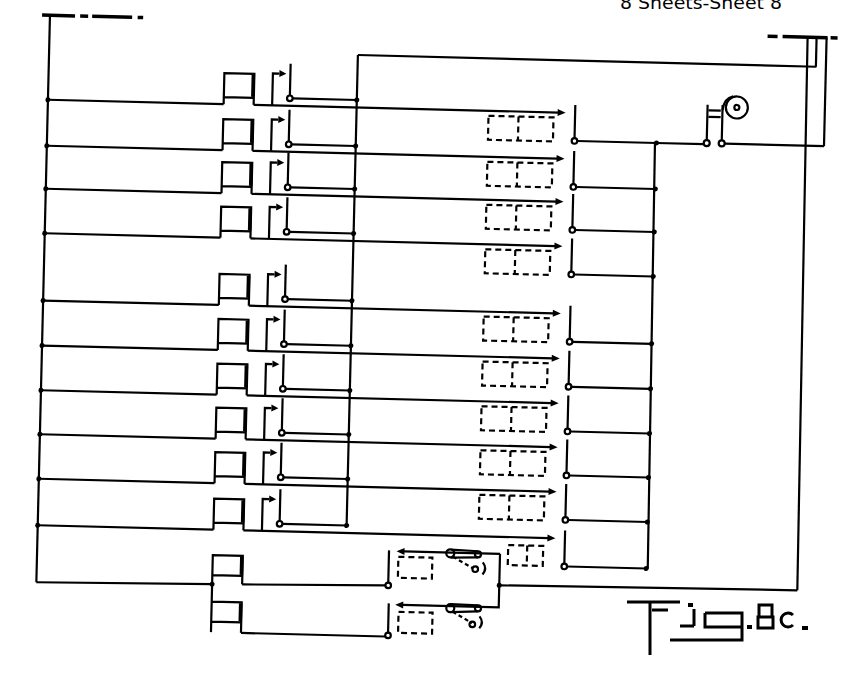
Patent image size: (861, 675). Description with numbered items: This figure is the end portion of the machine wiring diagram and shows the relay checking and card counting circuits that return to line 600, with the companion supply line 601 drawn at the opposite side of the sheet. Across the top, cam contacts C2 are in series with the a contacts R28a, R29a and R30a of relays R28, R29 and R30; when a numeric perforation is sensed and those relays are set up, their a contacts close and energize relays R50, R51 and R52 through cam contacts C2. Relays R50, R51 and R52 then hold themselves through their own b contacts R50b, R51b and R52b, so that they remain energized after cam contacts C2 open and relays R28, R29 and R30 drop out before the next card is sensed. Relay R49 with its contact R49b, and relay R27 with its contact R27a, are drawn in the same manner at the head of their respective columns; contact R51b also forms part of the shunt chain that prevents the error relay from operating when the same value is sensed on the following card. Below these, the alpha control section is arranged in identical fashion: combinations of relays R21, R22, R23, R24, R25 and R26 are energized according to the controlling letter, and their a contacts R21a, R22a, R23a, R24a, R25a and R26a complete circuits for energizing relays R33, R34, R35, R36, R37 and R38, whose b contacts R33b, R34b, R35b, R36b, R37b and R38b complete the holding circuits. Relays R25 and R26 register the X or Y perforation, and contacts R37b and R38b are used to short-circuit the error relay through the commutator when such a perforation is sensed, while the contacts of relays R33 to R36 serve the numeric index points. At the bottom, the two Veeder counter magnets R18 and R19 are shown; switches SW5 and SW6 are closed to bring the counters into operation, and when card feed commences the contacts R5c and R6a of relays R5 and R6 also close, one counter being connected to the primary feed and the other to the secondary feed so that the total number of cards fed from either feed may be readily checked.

The line 600 is at (51, 49).
The supply bus conductor 601 is at (826, 21).
The cam contacts C2 is at (726, 105).
The relay R49 is at (216, 88).
The relay contact R49b is at (316, 85).
The relay R50 is at (215, 134).
The b contact of relay R50 R50b is at (315, 131).
The relay R51 is at (214, 177).
The b contact of relay R51 R51b is at (314, 174).
The relay R52 is at (212, 221).
The b contact of relay R52 R52b is at (313, 219).
The relay R33 is at (211, 289).
The b contact of relay R33 R33b is at (311, 286).
The relay R34 is at (210, 334).
The b contact of relay R34 R34b is at (310, 331).
The relay R35 is at (209, 378).
The b contact of relay R35 R35b is at (309, 376).
The relay R36 is at (208, 422).
The b contact of relay R36 R36b is at (308, 420).
The relay R37 is at (207, 467).
The b contact of relay R37 R37b is at (307, 464).
The relay R38 is at (205, 513).
The b contact of relay R38 R38b is at (306, 511).
The relay (shown elsewhere) R27 is at (496, 133).
The relay contact R27a is at (616, 125).
The relay R28 is at (495, 179).
The a contact of relay R28 R28a is at (614, 171).
The relay R29 is at (494, 222).
The a contact of relay R29 R29a is at (613, 214).
The relay R30 is at (492, 266).
The a contact of relay R30 R30a is at (612, 258).
The relay R21 is at (491, 333).
The a contact of relay R21 R21a is at (611, 326).
The relay R22 is at (490, 378).
The a contact of relay R22 R22a is at (610, 371).
The relay R23 is at (489, 423).
The a contact of relay R23 R23a is at (609, 415).
The relay R24 is at (488, 467).
The a contact of relay R24 R24a is at (608, 459).
The relay R25 is at (487, 511).
The a contact of relay R25 R25a is at (607, 504).
The relay R26 is at (537, 576).
The a contact of relay R26 R26a is at (605, 550).
The magnet R19 is at (228, 561).
The magnet R18 is at (228, 608).
The contacts of relay R5 R5c is at (401, 549).
The contacts of relay R6 R6a is at (401, 600).
The relay R5 is at (424, 568).
The relay R6 is at (414, 623).
The switch SW5 is at (465, 572).
The switch SW6 is at (465, 631).